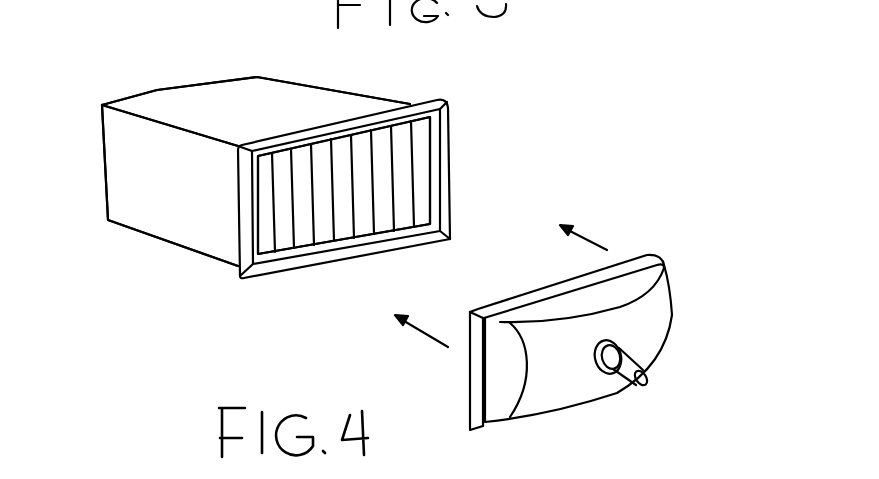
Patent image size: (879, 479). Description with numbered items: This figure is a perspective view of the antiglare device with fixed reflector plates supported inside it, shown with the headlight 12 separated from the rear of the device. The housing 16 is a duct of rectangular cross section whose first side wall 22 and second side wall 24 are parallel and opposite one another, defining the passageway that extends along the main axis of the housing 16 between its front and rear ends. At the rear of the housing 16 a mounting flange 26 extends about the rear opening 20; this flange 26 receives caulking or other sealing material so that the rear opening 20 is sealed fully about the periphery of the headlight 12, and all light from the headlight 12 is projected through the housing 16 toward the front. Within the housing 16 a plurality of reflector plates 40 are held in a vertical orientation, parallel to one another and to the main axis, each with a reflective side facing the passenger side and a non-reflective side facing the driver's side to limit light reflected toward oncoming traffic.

The headlight 12 is at (662, 325).
The housing 16 is at (207, 111).
The rear opening 20 is at (339, 216).
The first side wall 22 is at (355, 95).
The second side wall 24 is at (165, 212).
The mounting flange 26 is at (440, 150).
The reflector plates 40 is at (393, 201).